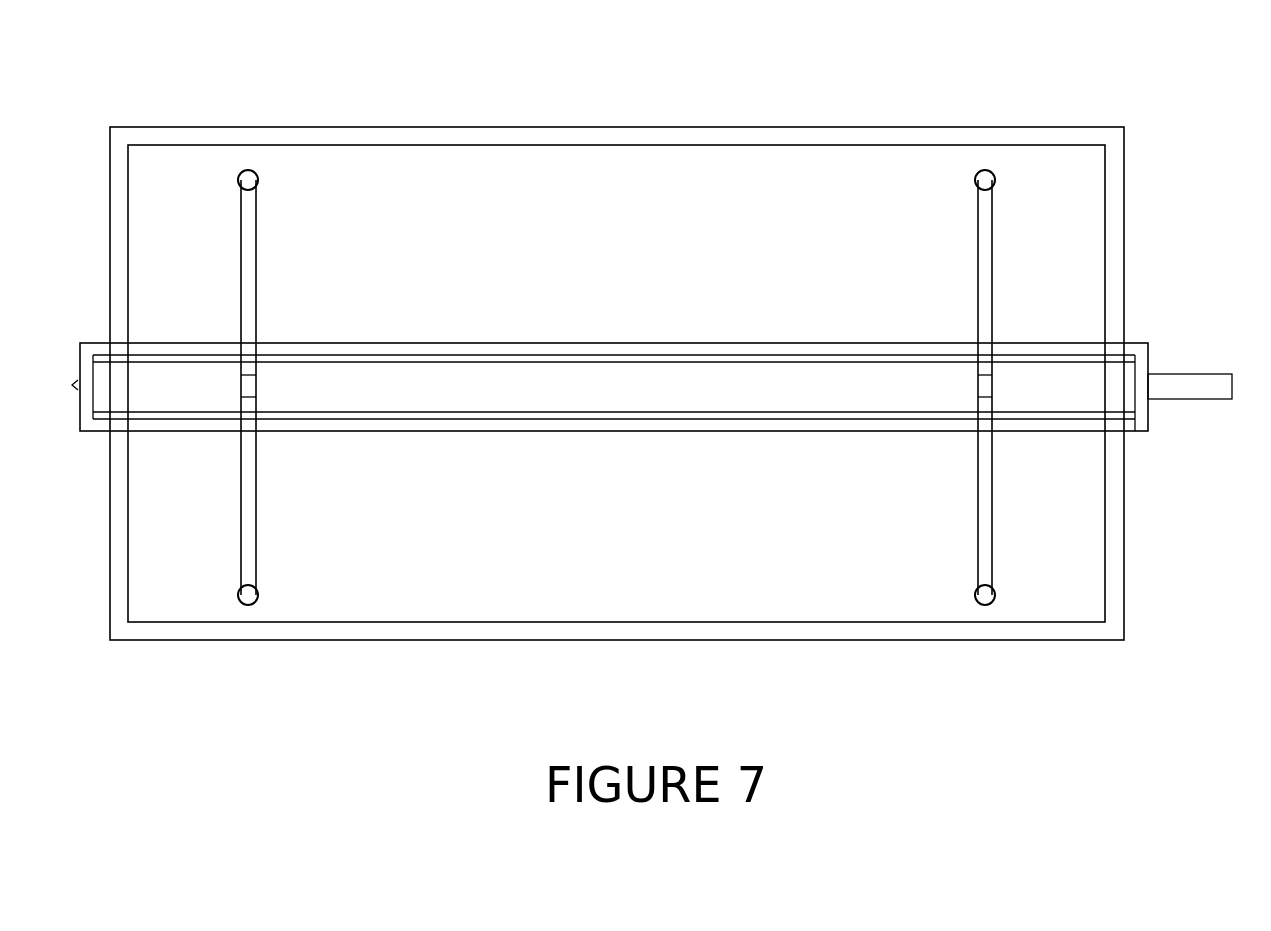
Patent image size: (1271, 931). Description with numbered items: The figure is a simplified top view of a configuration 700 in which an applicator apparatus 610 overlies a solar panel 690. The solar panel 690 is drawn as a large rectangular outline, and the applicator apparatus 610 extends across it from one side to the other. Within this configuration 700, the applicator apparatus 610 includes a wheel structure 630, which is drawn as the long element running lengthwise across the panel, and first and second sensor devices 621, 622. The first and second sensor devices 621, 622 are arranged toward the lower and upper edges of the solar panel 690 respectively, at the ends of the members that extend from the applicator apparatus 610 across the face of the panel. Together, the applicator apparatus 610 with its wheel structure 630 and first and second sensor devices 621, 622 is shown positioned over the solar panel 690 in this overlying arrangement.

The configuration 700 is at (791, 52).
The solar panel 690 is at (458, 126).
The wheel structure 630 is at (745, 412).
The second sensor device 622 is at (238, 187).
The first sensor device 621 is at (258, 601).
The applicator apparatus 610 is at (190, 360).